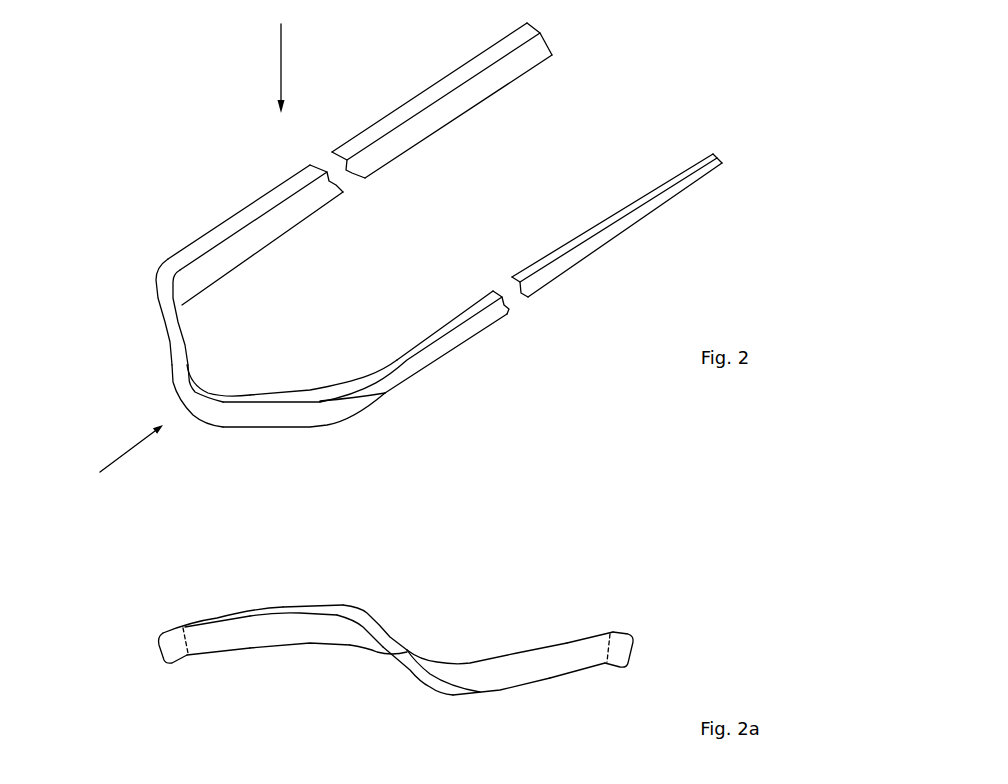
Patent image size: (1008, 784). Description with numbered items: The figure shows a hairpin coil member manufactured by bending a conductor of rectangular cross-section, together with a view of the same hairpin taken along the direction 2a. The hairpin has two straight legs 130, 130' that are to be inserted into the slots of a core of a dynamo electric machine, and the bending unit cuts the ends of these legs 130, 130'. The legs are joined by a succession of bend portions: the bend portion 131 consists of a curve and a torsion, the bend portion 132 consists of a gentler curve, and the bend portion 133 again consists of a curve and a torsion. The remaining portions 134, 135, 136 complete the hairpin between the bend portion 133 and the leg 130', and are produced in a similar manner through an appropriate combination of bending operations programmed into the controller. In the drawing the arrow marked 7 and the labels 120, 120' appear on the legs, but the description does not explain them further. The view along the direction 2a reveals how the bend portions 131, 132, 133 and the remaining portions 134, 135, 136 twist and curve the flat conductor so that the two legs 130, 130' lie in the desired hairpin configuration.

In FIG. 2, the viewing direction of FIG. 7 is at (278, 57).
In FIG. 2, the direction 2a is at (120, 457).
In FIG. 2, the end portion of first elongated member 120 is at (589, 39).
In FIG. 2, the end portion of second elongated member 120' is at (735, 124).
In FIG. 2, the leg 130 is at (492, 100).
In FIG. 2, the leg 130' is at (634, 191).
In FIG. 2, the bend portion 131 is at (137, 261).
In FIG. 2A, the bend portion 131 is at (202, 603).
In FIG. 2, the bend portion 132 is at (136, 321).
In FIG. 2A, the bend portion 132 is at (304, 657).
In FIG. 2, the bend portion 133 is at (141, 371).
In FIG. 2A, the bend portion 133 is at (389, 596).
In FIG. 2, the bend portion 134 is at (209, 374).
In FIG. 2A, the bend portion 134 is at (444, 706).
In FIG. 2, the bend portion 135 is at (286, 369).
In FIG. 2A, the bend portion 135 is at (536, 631).
In FIG. 2, the bend portion 136 is at (367, 345).
In FIG. 2A, the bend portion 136 is at (633, 610).